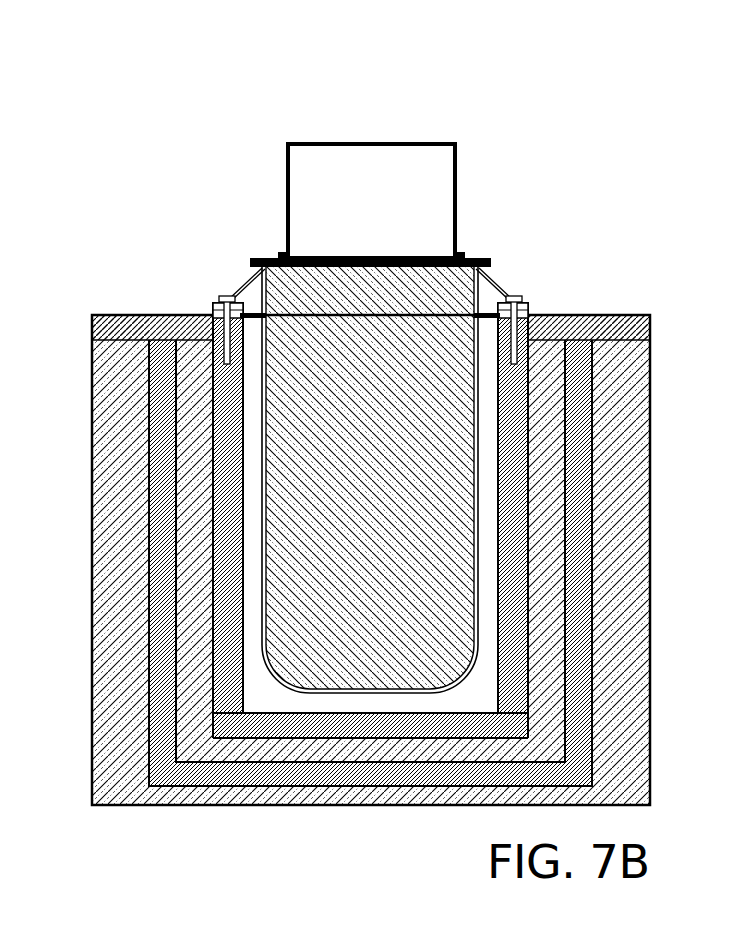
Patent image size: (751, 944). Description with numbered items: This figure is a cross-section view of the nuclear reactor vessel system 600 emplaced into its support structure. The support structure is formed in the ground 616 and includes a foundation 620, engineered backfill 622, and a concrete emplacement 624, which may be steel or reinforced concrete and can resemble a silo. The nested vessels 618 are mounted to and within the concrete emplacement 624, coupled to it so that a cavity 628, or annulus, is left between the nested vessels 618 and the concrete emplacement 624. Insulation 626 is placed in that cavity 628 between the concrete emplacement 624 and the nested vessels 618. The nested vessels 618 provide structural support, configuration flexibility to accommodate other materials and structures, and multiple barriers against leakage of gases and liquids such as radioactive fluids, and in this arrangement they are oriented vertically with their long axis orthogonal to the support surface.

The nuclear reactor vessel system 600 is at (156, 64).
The ground 616 is at (637, 352).
The nested vessels 618 is at (457, 303).
The foundation 620 is at (580, 512).
The engineered backfill 622 is at (543, 668).
The concrete emplacement 624 is at (222, 635).
The insulation 626 is at (223, 714).
The cavity 628 is at (486, 325).